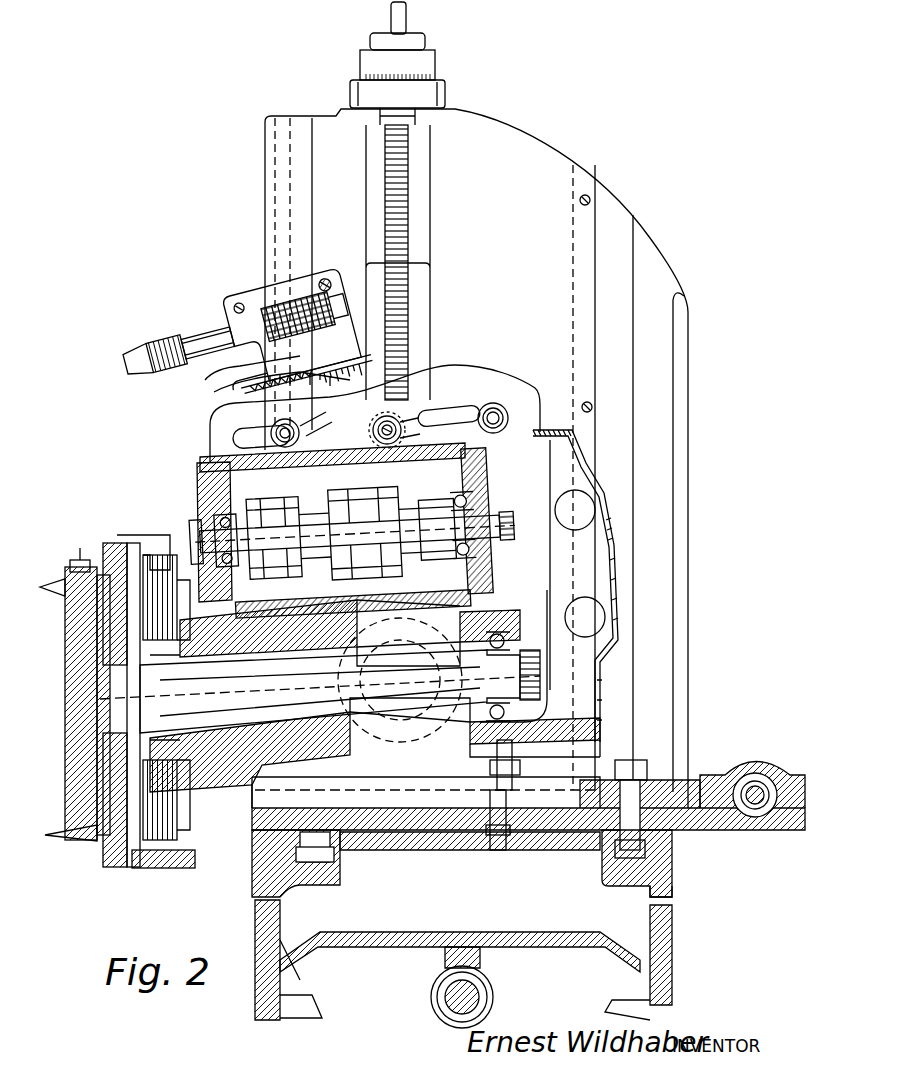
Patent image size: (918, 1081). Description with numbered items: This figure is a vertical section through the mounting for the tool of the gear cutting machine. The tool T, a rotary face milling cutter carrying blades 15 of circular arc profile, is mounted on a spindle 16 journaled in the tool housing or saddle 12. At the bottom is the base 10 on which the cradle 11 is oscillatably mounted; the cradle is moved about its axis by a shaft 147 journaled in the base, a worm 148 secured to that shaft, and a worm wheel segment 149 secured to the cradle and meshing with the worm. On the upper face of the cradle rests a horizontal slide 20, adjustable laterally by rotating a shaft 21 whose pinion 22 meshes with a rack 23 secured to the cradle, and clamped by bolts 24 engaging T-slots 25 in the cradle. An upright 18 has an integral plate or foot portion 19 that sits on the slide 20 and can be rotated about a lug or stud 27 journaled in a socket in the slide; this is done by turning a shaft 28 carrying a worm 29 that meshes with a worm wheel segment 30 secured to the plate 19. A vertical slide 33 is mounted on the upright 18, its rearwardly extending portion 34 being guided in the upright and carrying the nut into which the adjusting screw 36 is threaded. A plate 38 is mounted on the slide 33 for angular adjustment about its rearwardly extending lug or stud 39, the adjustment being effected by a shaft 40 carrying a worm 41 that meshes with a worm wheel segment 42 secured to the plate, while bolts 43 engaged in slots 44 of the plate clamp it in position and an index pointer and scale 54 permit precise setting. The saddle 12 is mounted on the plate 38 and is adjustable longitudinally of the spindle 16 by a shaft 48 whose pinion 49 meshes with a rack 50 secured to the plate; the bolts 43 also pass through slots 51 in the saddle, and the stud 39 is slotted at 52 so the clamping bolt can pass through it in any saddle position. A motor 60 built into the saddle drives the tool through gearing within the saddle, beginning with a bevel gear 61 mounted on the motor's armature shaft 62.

The base 10 is at (672, 966).
The cradle 11 is at (668, 886).
The tool housing or saddle 12 is at (583, 461).
The blades 15 is at (47, 592).
The spindle 16 is at (420, 662).
The upright 18 is at (604, 206).
The plate or foot portion 19 is at (420, 796).
The horizontal slide 20 is at (690, 822).
The shaft 21 is at (516, 771).
The pinion 22 is at (526, 834).
The rack 23 is at (498, 851).
The bolts 24 is at (632, 792).
The T-slots 25 is at (668, 853).
The lug or stud 27 is at (395, 842).
The shaft 28 is at (764, 782).
The worm 29 is at (790, 790).
The worm wheel segment 30 is at (722, 790).
The vertical slide 33 is at (253, 300).
The rearwardly extending portion 34 is at (418, 373).
The screw 36 is at (408, 229).
The plate 38 is at (490, 378).
The lug or stud 39 is at (433, 724).
The shaft 40 is at (168, 349).
The worm 41 is at (312, 292).
The worm wheel segment 42 is at (222, 373).
The bolts 43 is at (500, 411).
The slots 44 is at (451, 399).
The shaft 48 is at (376, 419).
The pinion 49 is at (374, 426).
The rack 50 is at (378, 436).
The slots 51 is at (404, 432).
The slot 52 is at (406, 692).
The index pointer and scale 54 is at (258, 395).
The motor 60 is at (204, 478).
The bevel gear 61 is at (490, 516).
The armature shaft 62 is at (470, 505).
The shaft 147 is at (447, 996).
The worm 148 is at (490, 998).
The worm wheel segment 149 is at (445, 960).
The tool T is at (82, 562).